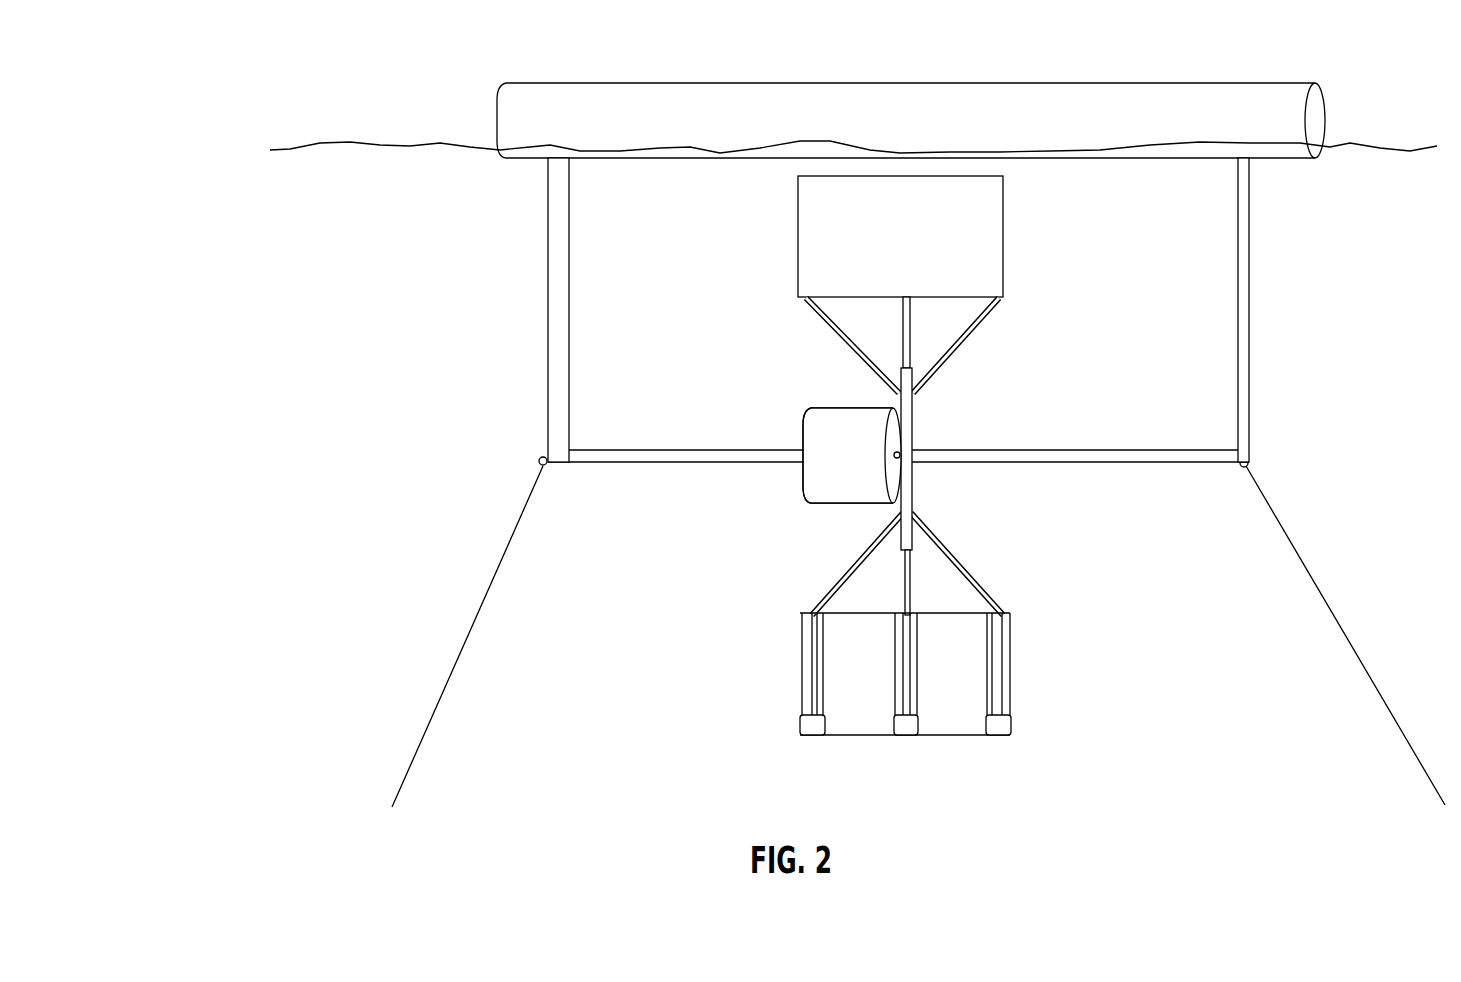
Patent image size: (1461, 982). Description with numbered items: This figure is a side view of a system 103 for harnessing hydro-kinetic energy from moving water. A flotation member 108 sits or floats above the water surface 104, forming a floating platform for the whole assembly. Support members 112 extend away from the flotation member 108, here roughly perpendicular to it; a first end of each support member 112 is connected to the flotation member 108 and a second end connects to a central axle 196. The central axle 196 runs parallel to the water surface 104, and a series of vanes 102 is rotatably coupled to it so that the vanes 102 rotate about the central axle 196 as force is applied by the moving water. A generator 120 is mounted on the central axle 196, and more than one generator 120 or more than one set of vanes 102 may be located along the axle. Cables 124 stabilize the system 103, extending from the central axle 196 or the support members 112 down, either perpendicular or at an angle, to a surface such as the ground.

The vanes 102 is at (740, 266).
The system 103 is at (208, 326).
The water surface 104 is at (270, 150).
The flotation member 108 is at (730, 83).
The support members 112 is at (547, 320).
The generator 120 is at (820, 495).
The cables 124 is at (458, 655).
The central axle 196 is at (1096, 462).